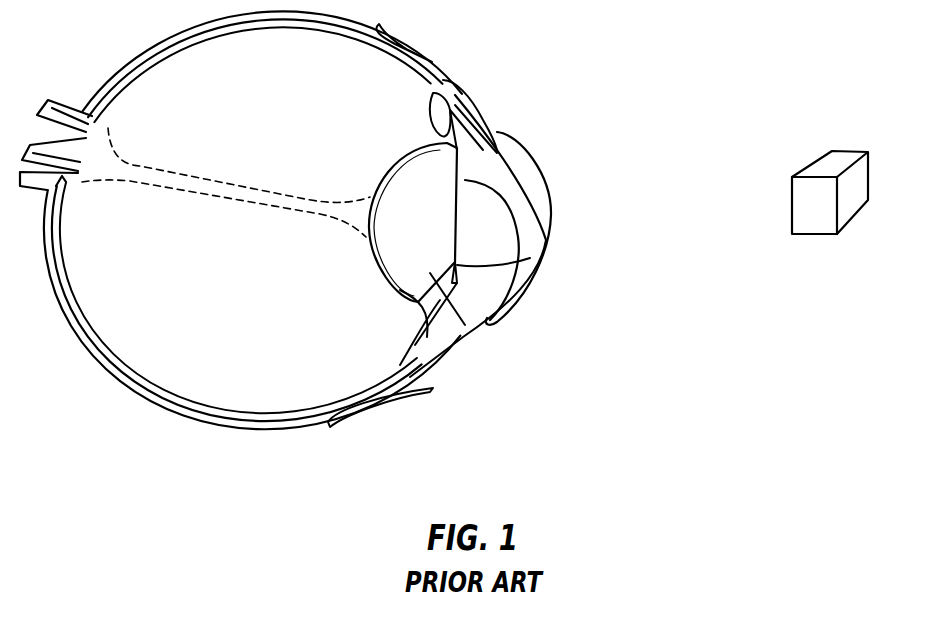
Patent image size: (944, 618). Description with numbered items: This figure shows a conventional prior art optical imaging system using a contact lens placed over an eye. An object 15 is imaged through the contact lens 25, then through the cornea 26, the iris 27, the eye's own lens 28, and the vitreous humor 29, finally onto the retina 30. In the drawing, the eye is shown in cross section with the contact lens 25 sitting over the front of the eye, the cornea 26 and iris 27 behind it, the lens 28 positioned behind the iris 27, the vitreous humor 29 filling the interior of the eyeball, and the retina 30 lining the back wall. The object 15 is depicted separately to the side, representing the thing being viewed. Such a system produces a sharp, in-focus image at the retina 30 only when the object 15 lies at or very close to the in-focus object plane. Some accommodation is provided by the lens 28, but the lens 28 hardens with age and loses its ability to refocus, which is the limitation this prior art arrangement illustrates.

The object 15 is at (828, 165).
The contact lens 25 is at (527, 157).
The cornea 26 is at (512, 181).
The iris 27 is at (462, 333).
The lens 28 is at (458, 325).
The vitreous humor 29 is at (337, 338).
The retina 30 is at (68, 248).